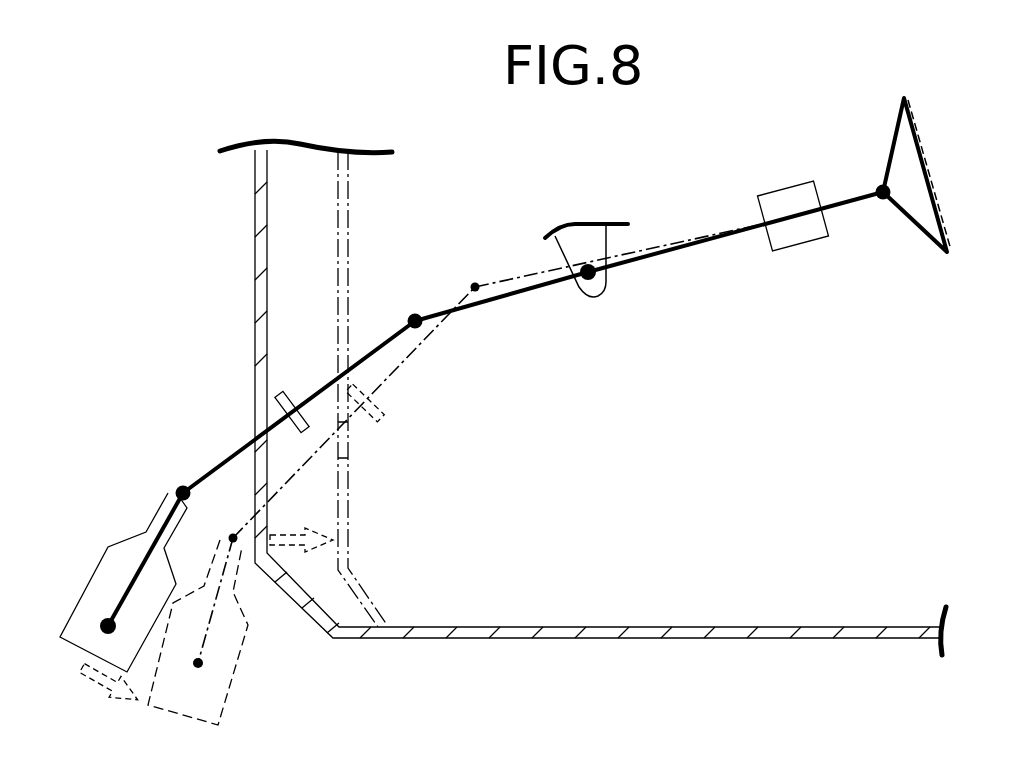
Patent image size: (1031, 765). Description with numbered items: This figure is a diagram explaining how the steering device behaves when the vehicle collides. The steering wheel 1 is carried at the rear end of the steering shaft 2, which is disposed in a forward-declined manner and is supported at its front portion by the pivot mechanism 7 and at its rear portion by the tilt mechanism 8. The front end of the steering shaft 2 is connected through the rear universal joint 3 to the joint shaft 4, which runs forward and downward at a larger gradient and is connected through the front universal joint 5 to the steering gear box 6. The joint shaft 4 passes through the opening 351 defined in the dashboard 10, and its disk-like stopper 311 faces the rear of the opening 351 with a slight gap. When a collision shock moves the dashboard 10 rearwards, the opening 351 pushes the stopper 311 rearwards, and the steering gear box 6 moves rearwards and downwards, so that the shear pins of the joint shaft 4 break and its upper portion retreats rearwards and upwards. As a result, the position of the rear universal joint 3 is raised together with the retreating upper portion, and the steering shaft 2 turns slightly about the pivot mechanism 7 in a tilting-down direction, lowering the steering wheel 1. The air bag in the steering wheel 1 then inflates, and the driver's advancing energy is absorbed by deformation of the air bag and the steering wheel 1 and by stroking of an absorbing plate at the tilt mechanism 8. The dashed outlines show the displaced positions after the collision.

The steering wheel 1 is at (940, 202).
The steering shaft 2 is at (503, 300).
The rear universal joint 3 is at (410, 314).
The joint shaft 4 is at (380, 345).
The front universal joint 5 is at (178, 488).
The steering gear box 6 is at (82, 590).
The pivot mechanism 7 is at (596, 283).
The tilt mechanism 8 is at (800, 247).
The dashboard 10 is at (267, 257).
The stopper 311 is at (291, 395).
The opening 351 is at (255, 436).